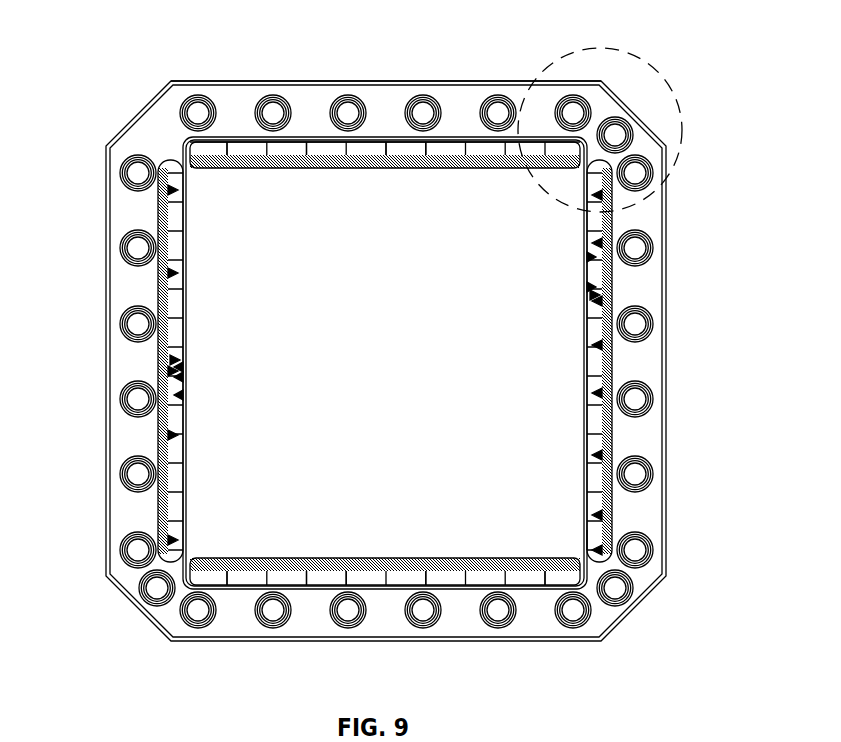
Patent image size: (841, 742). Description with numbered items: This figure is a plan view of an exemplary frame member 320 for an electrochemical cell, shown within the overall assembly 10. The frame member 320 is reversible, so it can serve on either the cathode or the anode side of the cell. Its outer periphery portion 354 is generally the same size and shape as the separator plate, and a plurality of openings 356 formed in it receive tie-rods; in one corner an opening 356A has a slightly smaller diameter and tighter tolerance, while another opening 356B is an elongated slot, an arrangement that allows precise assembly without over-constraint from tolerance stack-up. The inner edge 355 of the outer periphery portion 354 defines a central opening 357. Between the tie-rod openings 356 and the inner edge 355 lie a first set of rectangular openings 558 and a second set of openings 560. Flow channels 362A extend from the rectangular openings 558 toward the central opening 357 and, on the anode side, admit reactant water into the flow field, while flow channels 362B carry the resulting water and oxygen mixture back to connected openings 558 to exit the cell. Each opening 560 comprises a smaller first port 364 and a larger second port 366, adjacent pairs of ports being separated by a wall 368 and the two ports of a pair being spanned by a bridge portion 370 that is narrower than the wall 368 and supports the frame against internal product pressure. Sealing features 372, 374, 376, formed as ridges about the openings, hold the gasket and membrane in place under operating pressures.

The system 10 is at (641, 57).
The frame member 320 is at (157, 664).
The outer periphery portion 354 is at (267, 82).
The inner edge 355 is at (383, 172).
The openings 356 is at (422, 100).
The opening 356A is at (143, 598).
The opening 356B is at (630, 130).
The opening 357 is at (413, 364).
The first set of rectangular openings 558 is at (246, 150).
The second set of openings 560 is at (165, 192).
The flow channels 362A is at (241, 548).
The flow channels 362B is at (247, 178).
The first port 364 is at (183, 395).
The second port 366 is at (181, 367).
The wall 368 is at (181, 360).
The bridge portion 370 is at (183, 375).
The sealing feature 372 is at (197, 96).
The sealing feature 374 is at (533, 136).
The sealing feature 376 is at (614, 526).